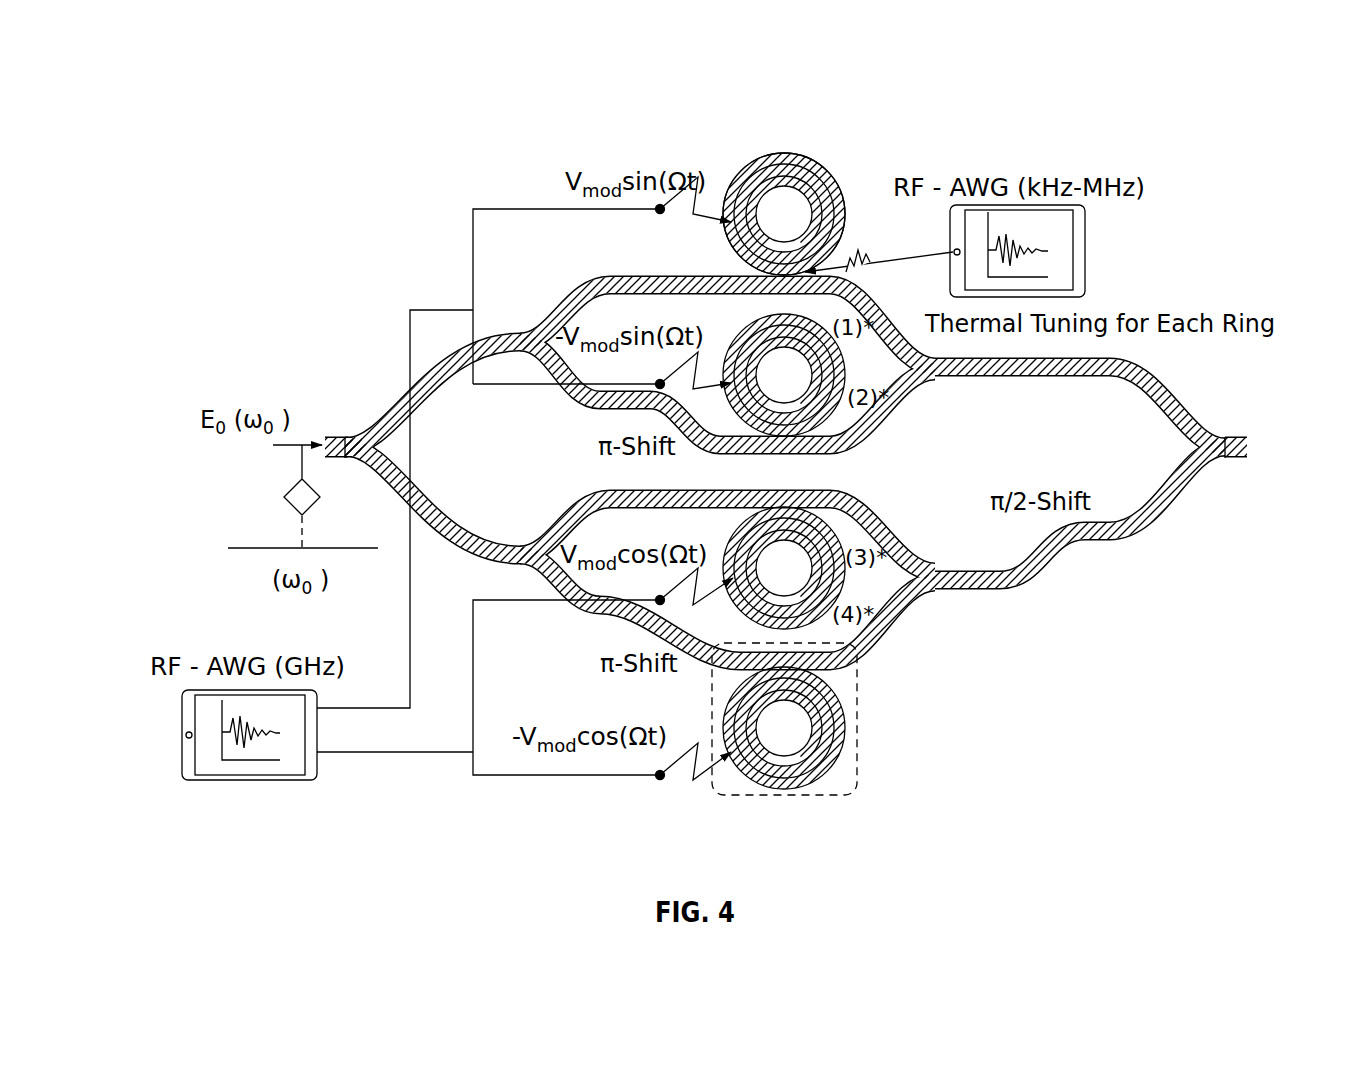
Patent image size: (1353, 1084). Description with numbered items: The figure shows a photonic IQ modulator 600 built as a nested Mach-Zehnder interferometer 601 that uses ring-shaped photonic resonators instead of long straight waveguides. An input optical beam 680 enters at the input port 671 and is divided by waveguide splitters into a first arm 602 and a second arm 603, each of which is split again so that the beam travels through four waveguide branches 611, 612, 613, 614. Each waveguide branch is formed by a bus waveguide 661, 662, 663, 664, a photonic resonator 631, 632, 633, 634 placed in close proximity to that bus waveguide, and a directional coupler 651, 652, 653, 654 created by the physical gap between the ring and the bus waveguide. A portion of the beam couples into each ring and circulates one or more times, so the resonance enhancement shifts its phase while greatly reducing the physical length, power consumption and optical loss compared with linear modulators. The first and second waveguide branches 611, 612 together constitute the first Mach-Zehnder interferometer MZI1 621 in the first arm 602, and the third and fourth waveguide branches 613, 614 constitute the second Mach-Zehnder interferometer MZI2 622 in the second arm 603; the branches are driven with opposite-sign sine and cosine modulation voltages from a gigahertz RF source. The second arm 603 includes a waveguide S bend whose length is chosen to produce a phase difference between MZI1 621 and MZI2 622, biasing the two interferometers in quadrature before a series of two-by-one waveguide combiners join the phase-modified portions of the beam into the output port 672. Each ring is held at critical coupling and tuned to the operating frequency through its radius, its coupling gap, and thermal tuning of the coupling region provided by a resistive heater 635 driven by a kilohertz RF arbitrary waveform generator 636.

The photonic IQ modulator 600 is at (216, 118).
The nested Mach-Zehnder interferometer 601 is at (365, 385).
The first arm 602 is at (405, 368).
The second arm 603 is at (395, 537).
The Branch 1 waveguide branch 611 is at (583, 282).
The Branch 2 waveguide branch 612 is at (583, 408).
The Branch 3 waveguide branch 613 is at (558, 503).
The Branch 4 waveguide branch 614 is at (638, 630).
The first Mach-Zehnder interferometer MZI1 621 is at (777, 148).
The second Mach-Zehnder interferometer MZI2 622 is at (775, 802).
The photonic resonator 631 is at (805, 161).
The photonic resonator 632 is at (835, 378).
The photonic resonator 633 is at (835, 578).
The photonic resonator 634 is at (795, 780).
The resistive heater 635 is at (1086, 250).
The kHz RF arbitrary waveform generator 636 is at (250, 782).
The directional coupler 651 is at (733, 262).
The directional coupler 652 is at (835, 447).
The directional coupler 653 is at (835, 496).
The directional coupler 654 is at (740, 664).
The bus waveguide 661 is at (905, 318).
The bus waveguide 662 is at (918, 392).
The bus waveguide 663 is at (900, 524).
The bus waveguide 664 is at (905, 632).
The input port 671 is at (345, 445).
The output port 672 is at (1238, 440).
The input optical beam 680 is at (283, 447).